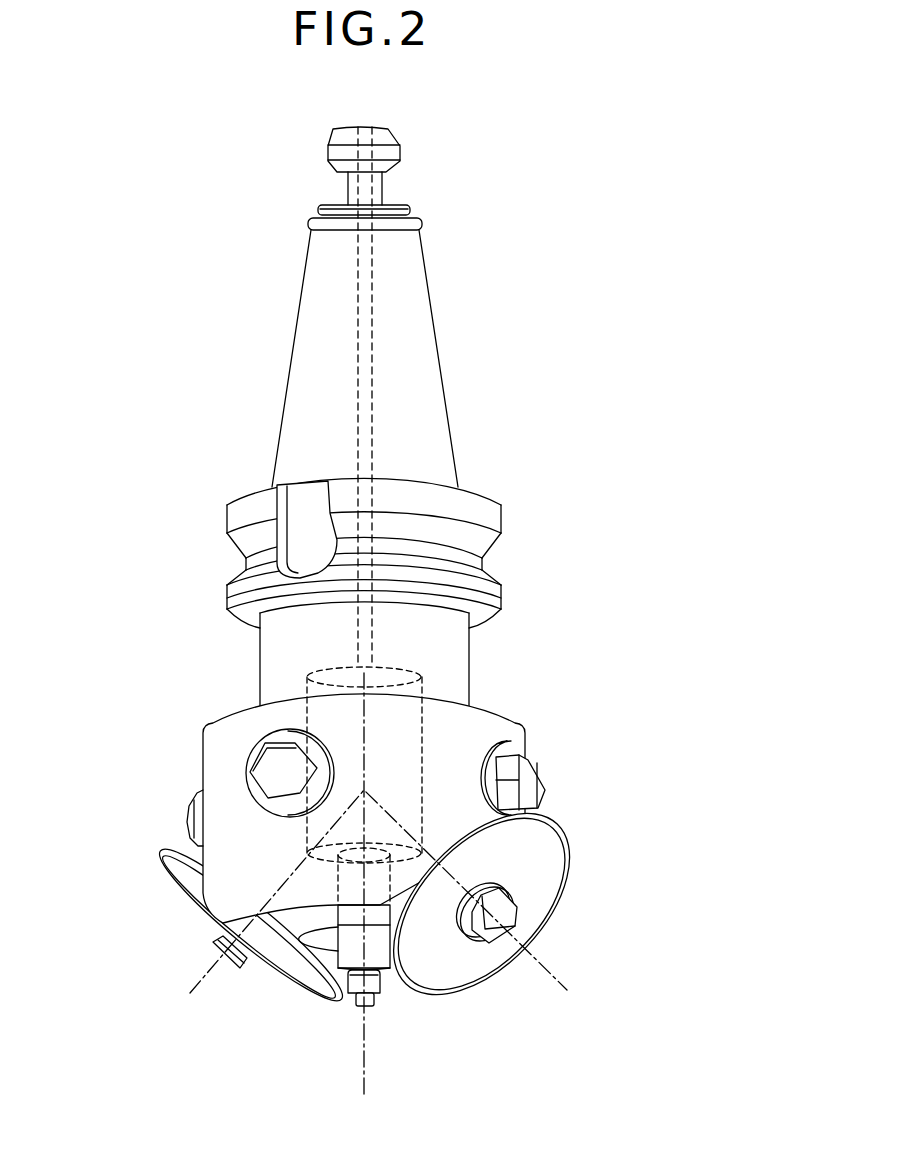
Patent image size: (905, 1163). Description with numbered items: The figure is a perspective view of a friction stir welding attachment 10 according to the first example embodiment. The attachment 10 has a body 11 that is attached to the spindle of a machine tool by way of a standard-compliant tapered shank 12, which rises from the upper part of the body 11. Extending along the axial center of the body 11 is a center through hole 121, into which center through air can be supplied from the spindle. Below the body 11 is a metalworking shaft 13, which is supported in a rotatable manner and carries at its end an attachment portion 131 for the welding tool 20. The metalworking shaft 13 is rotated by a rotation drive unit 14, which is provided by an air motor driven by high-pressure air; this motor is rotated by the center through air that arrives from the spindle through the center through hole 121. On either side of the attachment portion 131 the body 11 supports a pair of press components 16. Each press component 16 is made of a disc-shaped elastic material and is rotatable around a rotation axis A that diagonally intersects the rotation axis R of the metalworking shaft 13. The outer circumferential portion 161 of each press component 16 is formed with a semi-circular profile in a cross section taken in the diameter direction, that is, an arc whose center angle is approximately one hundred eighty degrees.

The friction stir welding attachment 10 is at (148, 447).
The body 11 is at (203, 741).
The tapered shank 12 is at (430, 289).
The center through hole 121 is at (372, 350).
The metalworking shaft 13 is at (338, 952).
The attachment portion 131 is at (385, 978).
The rotation drive unit 14 is at (400, 738).
The press component 16 is at (163, 858).
The outer circumferential portion 161 is at (543, 815).
The welding tool 20 is at (350, 1016).